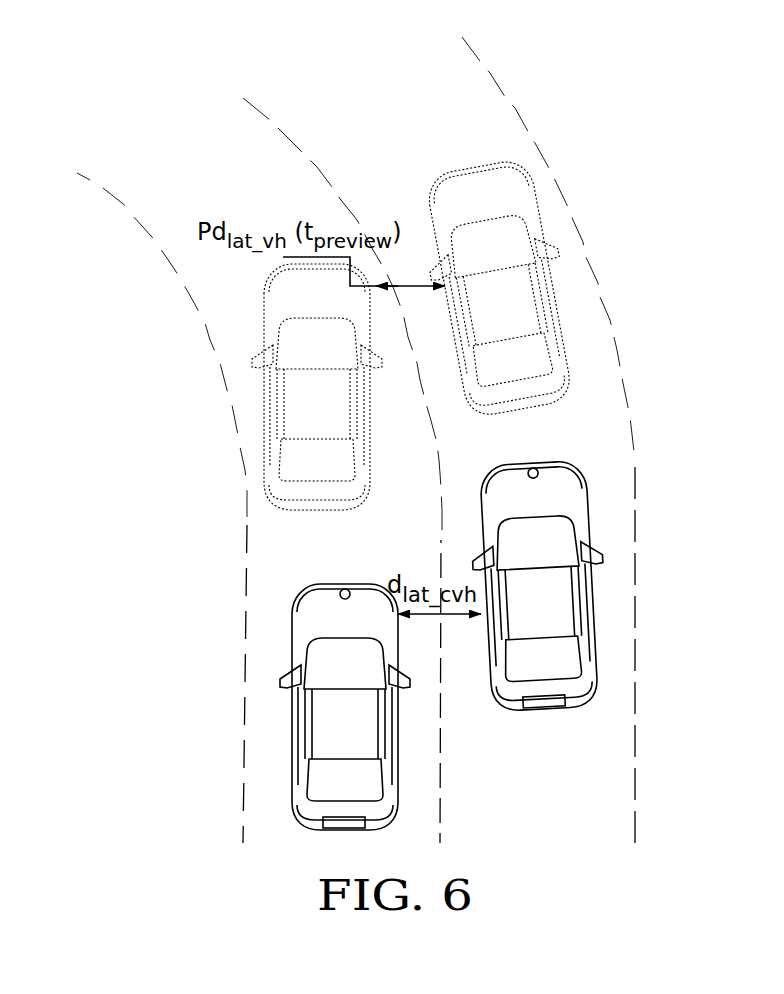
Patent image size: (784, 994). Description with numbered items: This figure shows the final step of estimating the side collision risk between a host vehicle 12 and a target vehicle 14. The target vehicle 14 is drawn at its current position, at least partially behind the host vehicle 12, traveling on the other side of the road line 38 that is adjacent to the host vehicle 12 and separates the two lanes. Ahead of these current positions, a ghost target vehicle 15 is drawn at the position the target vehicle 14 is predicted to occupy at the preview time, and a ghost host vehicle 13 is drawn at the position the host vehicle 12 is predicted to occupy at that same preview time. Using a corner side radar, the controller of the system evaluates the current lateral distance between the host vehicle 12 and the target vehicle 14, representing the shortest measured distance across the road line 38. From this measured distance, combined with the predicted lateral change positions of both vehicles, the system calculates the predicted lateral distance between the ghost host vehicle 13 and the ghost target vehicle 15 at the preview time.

The road line 38 is at (250, 183).
The ghost target vehicle 15 is at (253, 318).
The ghost host vehicle 13 is at (560, 278).
The target vehicle 14 is at (287, 710).
The host vehicle 12 is at (602, 593).